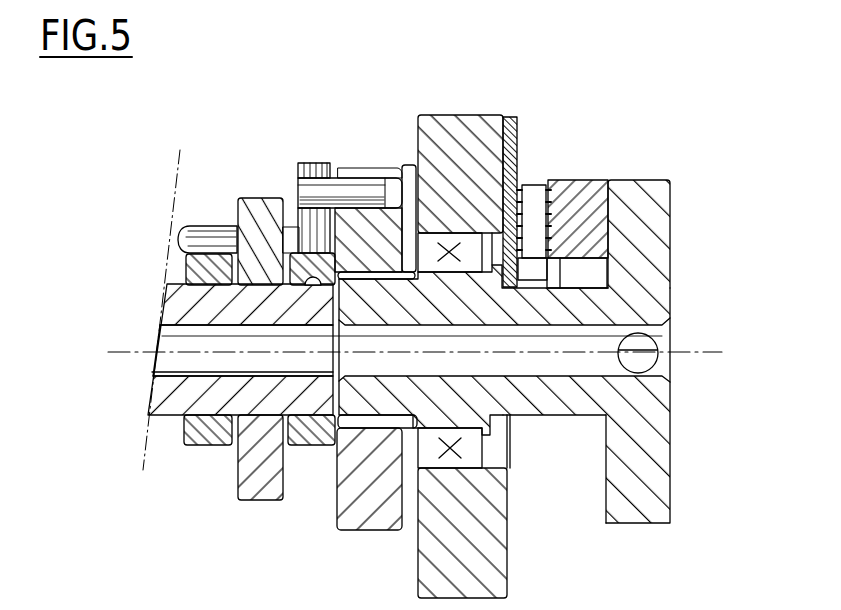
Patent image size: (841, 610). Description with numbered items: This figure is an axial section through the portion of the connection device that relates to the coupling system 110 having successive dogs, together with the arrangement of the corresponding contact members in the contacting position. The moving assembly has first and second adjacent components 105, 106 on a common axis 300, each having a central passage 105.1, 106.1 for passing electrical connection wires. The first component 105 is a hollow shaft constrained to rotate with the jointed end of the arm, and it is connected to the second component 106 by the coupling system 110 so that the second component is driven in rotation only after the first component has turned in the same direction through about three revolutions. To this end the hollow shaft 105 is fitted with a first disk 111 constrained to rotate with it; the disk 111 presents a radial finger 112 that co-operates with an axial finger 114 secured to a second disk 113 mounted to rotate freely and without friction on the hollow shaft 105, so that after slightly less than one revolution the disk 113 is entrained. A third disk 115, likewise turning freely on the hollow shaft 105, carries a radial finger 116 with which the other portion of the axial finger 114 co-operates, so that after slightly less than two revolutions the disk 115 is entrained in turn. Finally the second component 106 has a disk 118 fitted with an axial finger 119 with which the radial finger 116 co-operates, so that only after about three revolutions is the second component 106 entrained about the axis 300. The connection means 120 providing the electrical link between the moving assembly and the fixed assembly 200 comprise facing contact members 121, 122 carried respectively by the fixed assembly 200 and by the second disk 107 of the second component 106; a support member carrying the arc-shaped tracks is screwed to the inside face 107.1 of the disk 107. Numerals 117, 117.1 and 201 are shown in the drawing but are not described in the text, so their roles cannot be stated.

The first component 105 is at (169, 400).
The central passage 105.1 is at (170, 326).
The second component 106 is at (527, 417).
The central passage 106.1 is at (563, 400).
The second disk 107 is at (638, 507).
The inside face 107.1 is at (603, 508).
The coupling system 110 is at (215, 163).
The first disk 111 is at (210, 432).
The radial finger 112 is at (213, 225).
The second disk 113 is at (262, 480).
The axial finger 114 is at (192, 242).
The third disk 115 is at (318, 440).
The radial finger 116 is at (313, 162).
The housing wall 117 is at (592, 400).
The bearing seat 117.1 is at (433, 243).
The disk 118 is at (365, 505).
The axial finger 119 is at (299, 192).
The connection means 120 is at (611, 158).
The contact member 121 is at (533, 186).
The contact member 122 is at (585, 182).
The fixed assembly 200 is at (489, 112).
The bearing block 201 is at (440, 113).
The axis 300 is at (682, 353).